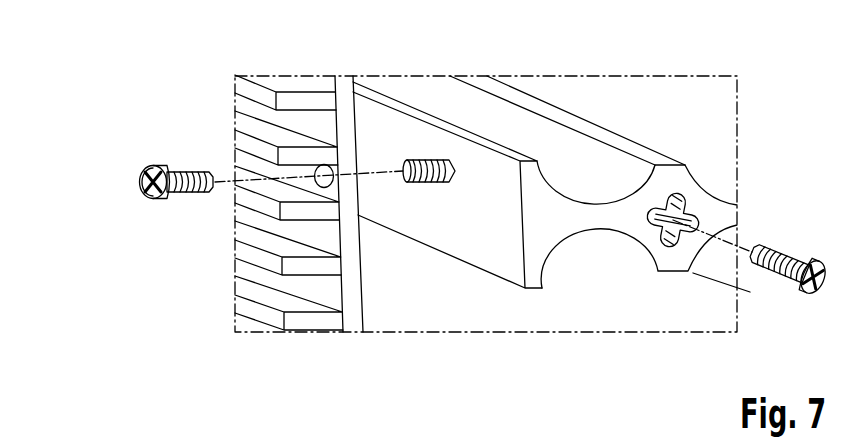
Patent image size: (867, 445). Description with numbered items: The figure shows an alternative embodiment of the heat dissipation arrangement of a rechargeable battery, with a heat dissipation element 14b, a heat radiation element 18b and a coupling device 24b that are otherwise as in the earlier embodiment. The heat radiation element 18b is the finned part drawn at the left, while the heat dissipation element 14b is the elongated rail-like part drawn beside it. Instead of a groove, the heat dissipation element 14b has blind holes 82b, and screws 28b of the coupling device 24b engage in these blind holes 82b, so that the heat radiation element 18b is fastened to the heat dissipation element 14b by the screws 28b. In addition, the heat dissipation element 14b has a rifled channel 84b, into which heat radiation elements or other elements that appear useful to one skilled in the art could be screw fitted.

The heat dissipation element 14b is at (527, 108).
The heat radiation element 18b is at (308, 93).
The coupling device 24b is at (104, 164).
The screw 28b is at (190, 170).
The blind hole 82b is at (407, 158).
The rifled channel 84b is at (700, 256).